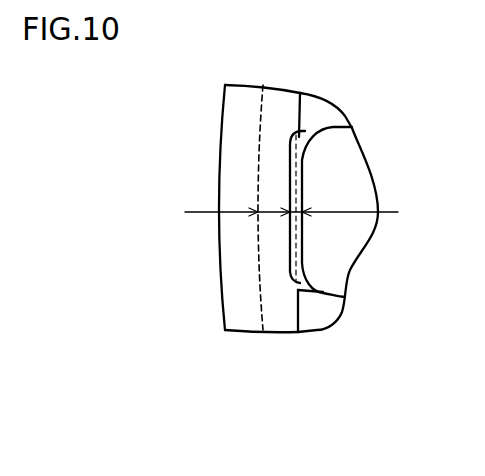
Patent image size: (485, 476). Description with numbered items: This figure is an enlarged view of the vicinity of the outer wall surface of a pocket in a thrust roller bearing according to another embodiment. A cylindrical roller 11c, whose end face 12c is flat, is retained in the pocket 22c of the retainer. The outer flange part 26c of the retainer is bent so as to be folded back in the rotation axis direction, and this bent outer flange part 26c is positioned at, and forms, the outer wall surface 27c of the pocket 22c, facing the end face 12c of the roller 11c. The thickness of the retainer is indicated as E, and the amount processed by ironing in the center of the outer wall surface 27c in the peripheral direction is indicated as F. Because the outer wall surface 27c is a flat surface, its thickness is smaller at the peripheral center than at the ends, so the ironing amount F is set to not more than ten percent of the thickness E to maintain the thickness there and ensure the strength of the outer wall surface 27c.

The outer flange part 26c is at (240, 132).
The pocket 22c is at (302, 137).
The roller 11c is at (348, 155).
The end face 12c is at (300, 252).
The outer wall surface 27c is at (302, 266).
The thickness of the retainer E is at (291, 203).
The amount processed by the ironing F is at (292, 215).